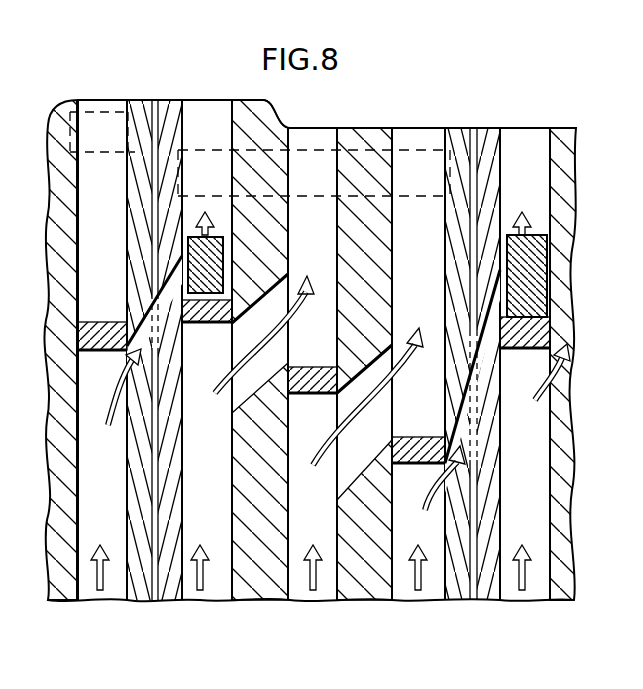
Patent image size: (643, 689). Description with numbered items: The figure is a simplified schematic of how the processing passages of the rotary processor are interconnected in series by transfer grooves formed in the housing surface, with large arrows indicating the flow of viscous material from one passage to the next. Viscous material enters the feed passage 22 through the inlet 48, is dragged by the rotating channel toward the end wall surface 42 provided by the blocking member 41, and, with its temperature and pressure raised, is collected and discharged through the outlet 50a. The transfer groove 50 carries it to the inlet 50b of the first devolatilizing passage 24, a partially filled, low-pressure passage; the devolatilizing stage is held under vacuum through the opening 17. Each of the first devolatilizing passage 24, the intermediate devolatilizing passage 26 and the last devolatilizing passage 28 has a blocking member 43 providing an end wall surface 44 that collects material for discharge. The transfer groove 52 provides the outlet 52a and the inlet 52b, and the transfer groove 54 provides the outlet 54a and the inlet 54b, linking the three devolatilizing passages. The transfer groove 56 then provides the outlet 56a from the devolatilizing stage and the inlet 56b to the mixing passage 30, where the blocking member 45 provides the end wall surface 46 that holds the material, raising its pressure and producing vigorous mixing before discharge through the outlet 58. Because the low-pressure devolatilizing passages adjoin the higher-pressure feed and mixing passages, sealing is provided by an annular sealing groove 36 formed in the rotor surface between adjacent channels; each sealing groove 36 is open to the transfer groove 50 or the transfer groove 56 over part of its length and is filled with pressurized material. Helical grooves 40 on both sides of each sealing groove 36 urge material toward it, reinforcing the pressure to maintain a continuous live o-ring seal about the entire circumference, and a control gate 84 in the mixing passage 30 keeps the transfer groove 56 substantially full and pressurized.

The opening 17 is at (318, 148).
The passage 22 is at (116, 594).
The first devolatilizing passage 24 is at (225, 592).
The intermediate devolatilizing passage 26 is at (323, 594).
The last devolatilizing passage 28 is at (432, 594).
The mixing passage 30 is at (540, 586).
The annular sealing groove 36 is at (156, 145).
The helical grooves 40 is at (148, 112).
The blocking member 41 is at (111, 322).
The end wall surface 42 is at (113, 352).
The blocking member 43 is at (235, 298).
The end wall surface 44 is at (220, 324).
The blocking member 45 is at (557, 340).
The end wall surface 46 is at (533, 351).
The inlet 48 is at (116, 157).
The transfer groove 50 is at (122, 366).
The outlet 50a is at (121, 422).
The inlet 50b is at (152, 263).
The transfer groove 52 is at (240, 352).
The outlet 52a is at (226, 415).
The inlet 52b is at (295, 282).
The transfer groove 54 is at (350, 408).
The outlet 54a is at (333, 475).
The inlet 54b is at (403, 347).
The transfer groove 56 is at (462, 422).
The outlet 56a is at (443, 512).
The inlet 56b is at (500, 270).
The outlet 58 is at (555, 394).
The control gate 84 is at (222, 247).